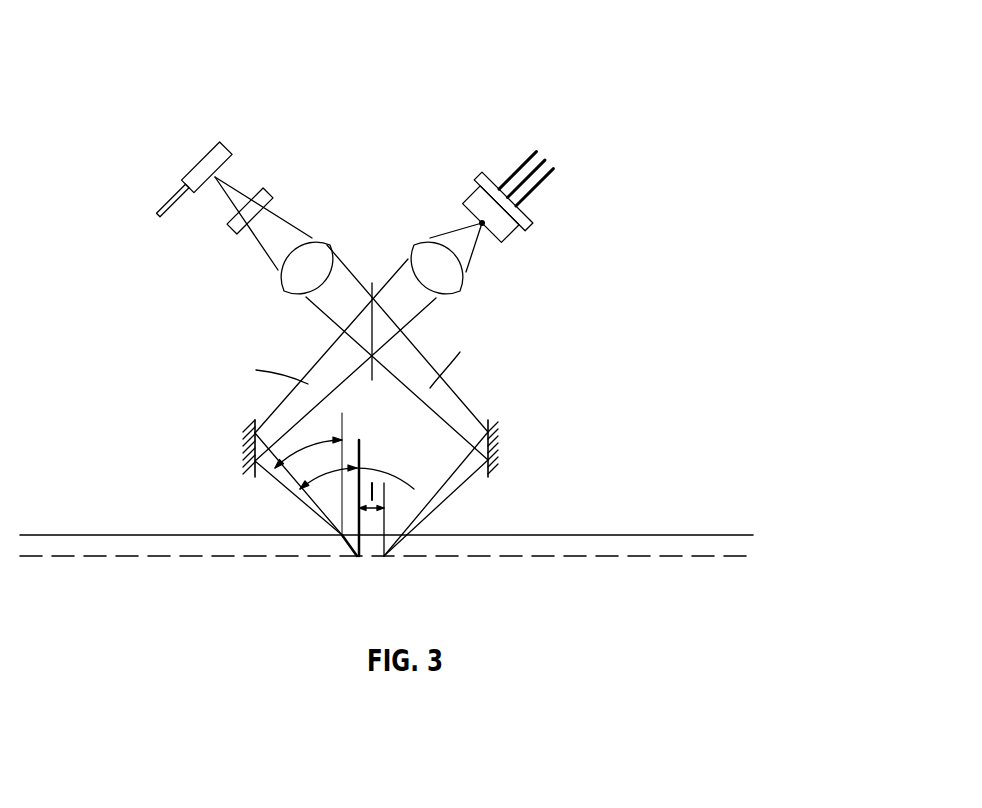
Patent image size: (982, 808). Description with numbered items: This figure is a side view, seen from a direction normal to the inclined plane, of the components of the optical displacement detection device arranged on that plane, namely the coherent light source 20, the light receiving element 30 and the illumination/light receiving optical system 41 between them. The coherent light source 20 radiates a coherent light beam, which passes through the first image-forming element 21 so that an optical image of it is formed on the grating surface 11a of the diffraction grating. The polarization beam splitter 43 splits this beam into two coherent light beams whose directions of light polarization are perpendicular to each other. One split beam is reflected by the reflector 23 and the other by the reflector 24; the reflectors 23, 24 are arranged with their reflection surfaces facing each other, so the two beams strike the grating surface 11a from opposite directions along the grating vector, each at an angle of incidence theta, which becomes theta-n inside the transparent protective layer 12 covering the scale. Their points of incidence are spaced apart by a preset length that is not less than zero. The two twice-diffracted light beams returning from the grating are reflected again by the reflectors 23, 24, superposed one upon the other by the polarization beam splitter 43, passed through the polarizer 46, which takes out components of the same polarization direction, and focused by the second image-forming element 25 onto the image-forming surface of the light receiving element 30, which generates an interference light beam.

The illumination/light receiving optical system 41 is at (165, 100).
The light receiving element 30 is at (230, 142).
The polarizer 46 is at (268, 187).
The second image-forming element 25 is at (322, 238).
The coherent light source 20 is at (472, 188).
The first image-forming element 21 is at (413, 240).
The polarization beam splitter 43 is at (372, 336).
The reflector 23 is at (250, 430).
The reflector 24 is at (492, 427).
The transparent protective layer 12 is at (658, 536).
The grating surface 11a is at (617, 557).